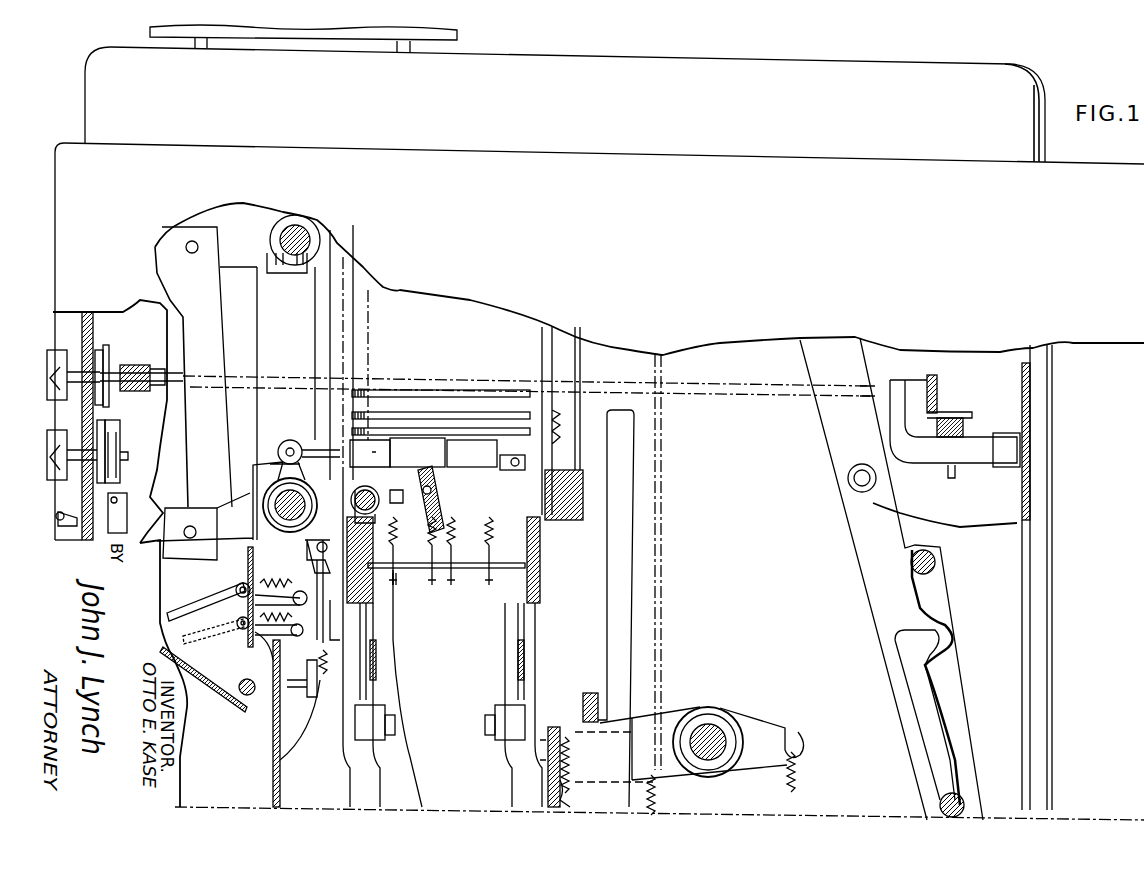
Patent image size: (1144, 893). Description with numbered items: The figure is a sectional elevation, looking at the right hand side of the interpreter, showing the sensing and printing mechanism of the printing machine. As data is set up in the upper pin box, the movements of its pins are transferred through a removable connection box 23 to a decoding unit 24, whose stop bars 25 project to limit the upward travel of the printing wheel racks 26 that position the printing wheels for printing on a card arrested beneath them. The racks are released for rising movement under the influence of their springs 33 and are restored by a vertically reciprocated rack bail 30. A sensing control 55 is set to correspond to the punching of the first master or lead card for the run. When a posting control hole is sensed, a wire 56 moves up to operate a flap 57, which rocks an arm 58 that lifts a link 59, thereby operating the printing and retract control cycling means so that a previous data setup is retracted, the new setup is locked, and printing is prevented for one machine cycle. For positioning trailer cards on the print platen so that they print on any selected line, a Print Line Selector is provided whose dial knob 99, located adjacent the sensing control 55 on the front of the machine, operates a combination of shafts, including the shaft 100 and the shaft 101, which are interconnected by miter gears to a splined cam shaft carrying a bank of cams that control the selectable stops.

The removable connection box 23 is at (530, 630).
The decoding unit 24 is at (437, 455).
The stop bars 25 is at (483, 420).
The printing wheel racks 26 is at (612, 575).
The rack bail 30 is at (583, 695).
The springs 33 is at (658, 803).
The control 55 is at (100, 440).
The wire 56 is at (400, 700).
The flap 57 is at (385, 488).
The arm 58 is at (410, 490).
The link 59 is at (420, 570).
The dial knob 99 is at (68, 350).
The shaft 100 is at (775, 398).
The shaft 101 is at (950, 474).